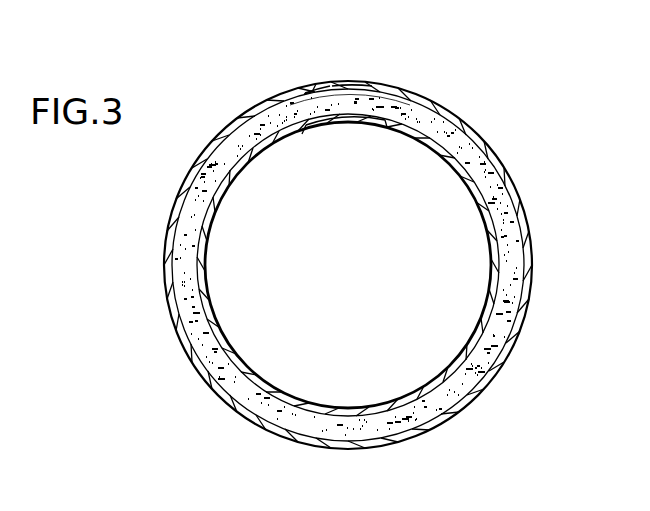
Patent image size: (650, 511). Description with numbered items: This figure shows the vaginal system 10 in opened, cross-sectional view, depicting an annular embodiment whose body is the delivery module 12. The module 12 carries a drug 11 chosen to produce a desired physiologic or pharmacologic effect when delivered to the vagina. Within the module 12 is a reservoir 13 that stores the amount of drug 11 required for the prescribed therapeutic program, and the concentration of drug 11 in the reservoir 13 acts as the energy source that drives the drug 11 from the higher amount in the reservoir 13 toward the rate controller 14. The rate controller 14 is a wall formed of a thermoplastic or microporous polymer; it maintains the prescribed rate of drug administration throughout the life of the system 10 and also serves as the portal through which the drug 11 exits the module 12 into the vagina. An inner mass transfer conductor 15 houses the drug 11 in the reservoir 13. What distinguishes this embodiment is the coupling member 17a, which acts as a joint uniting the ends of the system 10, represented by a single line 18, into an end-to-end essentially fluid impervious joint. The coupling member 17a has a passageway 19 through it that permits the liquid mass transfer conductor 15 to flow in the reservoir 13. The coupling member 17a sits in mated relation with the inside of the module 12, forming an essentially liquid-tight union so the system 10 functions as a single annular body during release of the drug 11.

The vaginal system 10 is at (532, 205).
The drug 11 is at (465, 147).
The delivery module 12 is at (440, 98).
The reservoir 13 is at (180, 280).
The rate controller 14 is at (168, 249).
The inner mass transfer conductor 15 is at (192, 330).
The coupling member 17a is at (312, 92).
The ends of system 18 is at (347, 82).
The passageway 19 is at (317, 100).